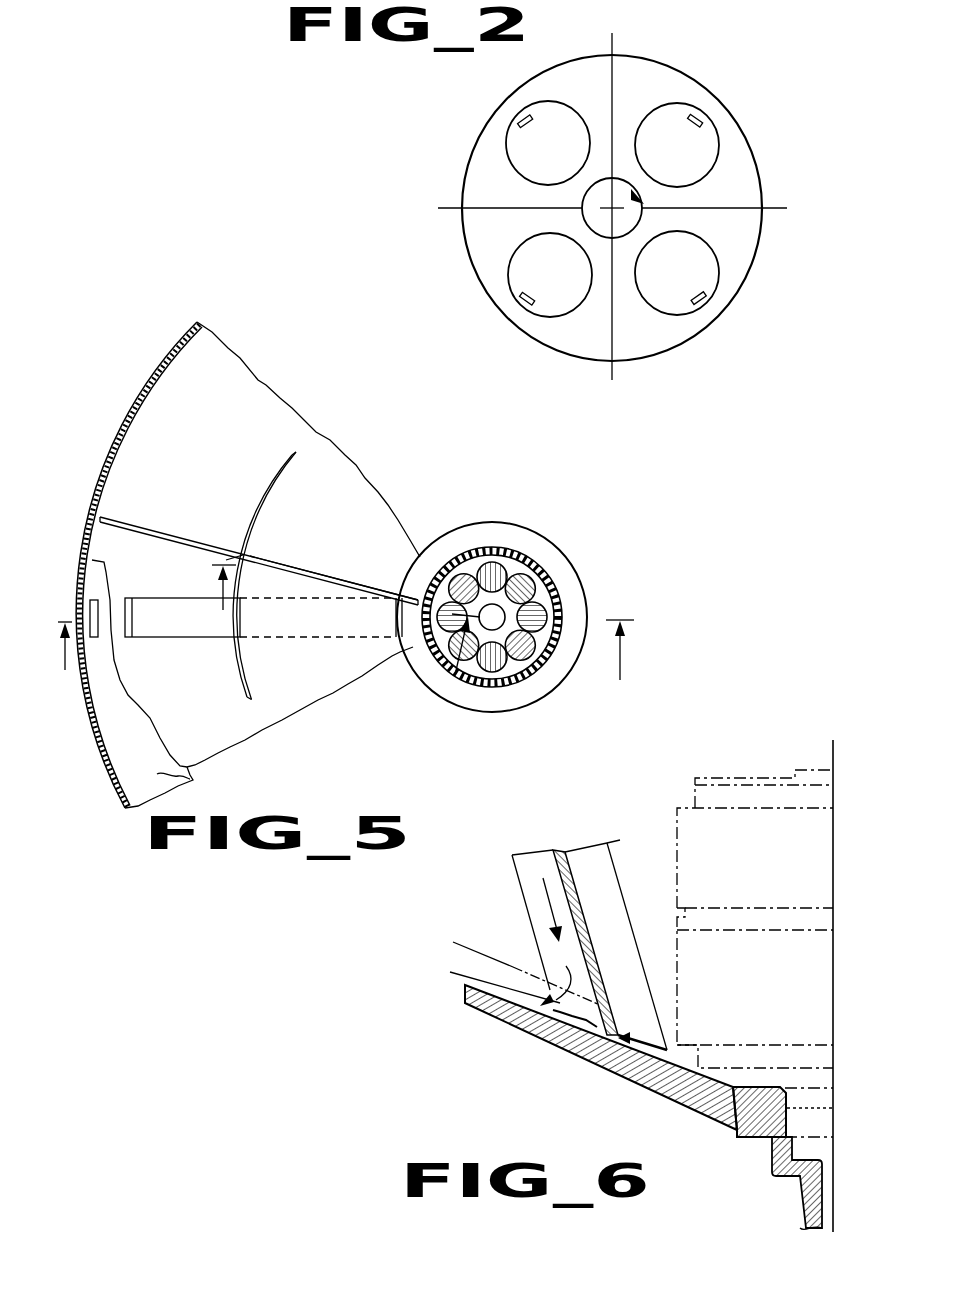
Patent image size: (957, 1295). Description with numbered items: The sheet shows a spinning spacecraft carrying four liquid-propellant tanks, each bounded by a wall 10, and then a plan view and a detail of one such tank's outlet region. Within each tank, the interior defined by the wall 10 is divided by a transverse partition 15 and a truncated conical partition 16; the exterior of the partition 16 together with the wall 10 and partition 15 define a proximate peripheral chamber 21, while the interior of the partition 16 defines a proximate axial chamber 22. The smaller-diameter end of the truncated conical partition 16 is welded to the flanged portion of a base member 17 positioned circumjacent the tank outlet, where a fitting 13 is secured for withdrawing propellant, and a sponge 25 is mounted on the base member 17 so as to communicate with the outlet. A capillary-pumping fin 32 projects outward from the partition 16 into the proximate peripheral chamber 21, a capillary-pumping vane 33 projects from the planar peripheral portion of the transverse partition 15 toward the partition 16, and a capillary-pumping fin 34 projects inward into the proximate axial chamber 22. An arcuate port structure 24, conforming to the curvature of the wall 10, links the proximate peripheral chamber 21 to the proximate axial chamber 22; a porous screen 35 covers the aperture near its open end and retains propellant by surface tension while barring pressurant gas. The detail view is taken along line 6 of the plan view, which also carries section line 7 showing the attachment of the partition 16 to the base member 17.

In FIG. 2, the wall 10 is at (558, 104).
In FIG. 5, the wall 10 is at (156, 371).
In FIG. 6, the wall 10 is at (486, 1003).
In FIG. 6, the fitting 13 is at (770, 1162).
In FIG. 5, the transverse partition 15 is at (188, 773).
In FIG. 5, the truncated conical partition 16 is at (277, 482).
In FIG. 6, the truncated conical partition 16 is at (556, 850).
In FIG. 5, the base member 17 is at (457, 530).
In FIG. 6, the base member 17 is at (686, 1062).
In FIG. 5, the proximate peripheral chamber 21 is at (208, 703).
In FIG. 5, the proximate axial chamber 22 is at (306, 670).
In FIG. 5, the port structure 24 is at (193, 638).
In FIG. 6, the port structure 24 is at (506, 955).
In FIG. 5, the sponge 25 is at (533, 557).
In FIG. 6, the sponge 25 is at (748, 768).
In FIG. 5, the capillary-pumping fin 32 is at (233, 558).
In FIG. 6, the capillary-pumping fin 32 is at (514, 852).
In FIG. 5, the capillary-pumping vane 33 is at (196, 504).
In FIG. 5, the capillary-pumping fin 34 is at (287, 565).
In FIG. 6, the capillary-pumping fin 34 is at (620, 884).
In FIG. 6, the porous screen 35 is at (568, 1033).
In FIG. 5, the section line 6— 6 is at (346, 634).
In FIG. 5, the section line 7— 7 is at (346, 661).